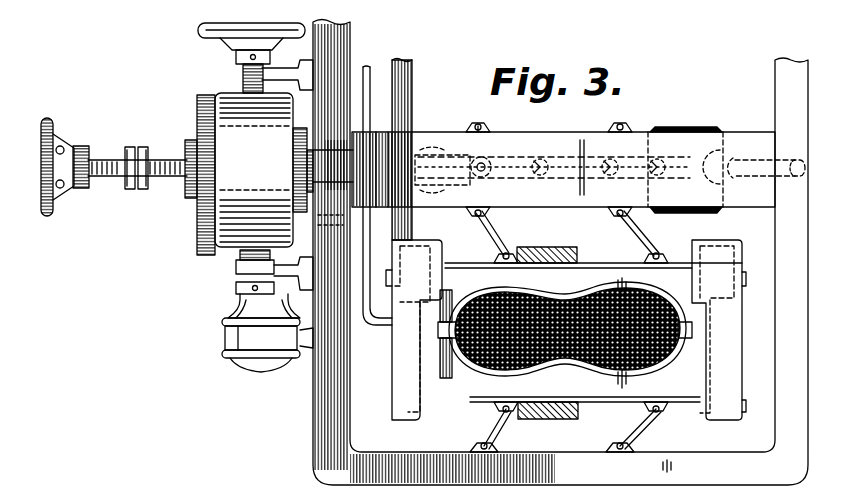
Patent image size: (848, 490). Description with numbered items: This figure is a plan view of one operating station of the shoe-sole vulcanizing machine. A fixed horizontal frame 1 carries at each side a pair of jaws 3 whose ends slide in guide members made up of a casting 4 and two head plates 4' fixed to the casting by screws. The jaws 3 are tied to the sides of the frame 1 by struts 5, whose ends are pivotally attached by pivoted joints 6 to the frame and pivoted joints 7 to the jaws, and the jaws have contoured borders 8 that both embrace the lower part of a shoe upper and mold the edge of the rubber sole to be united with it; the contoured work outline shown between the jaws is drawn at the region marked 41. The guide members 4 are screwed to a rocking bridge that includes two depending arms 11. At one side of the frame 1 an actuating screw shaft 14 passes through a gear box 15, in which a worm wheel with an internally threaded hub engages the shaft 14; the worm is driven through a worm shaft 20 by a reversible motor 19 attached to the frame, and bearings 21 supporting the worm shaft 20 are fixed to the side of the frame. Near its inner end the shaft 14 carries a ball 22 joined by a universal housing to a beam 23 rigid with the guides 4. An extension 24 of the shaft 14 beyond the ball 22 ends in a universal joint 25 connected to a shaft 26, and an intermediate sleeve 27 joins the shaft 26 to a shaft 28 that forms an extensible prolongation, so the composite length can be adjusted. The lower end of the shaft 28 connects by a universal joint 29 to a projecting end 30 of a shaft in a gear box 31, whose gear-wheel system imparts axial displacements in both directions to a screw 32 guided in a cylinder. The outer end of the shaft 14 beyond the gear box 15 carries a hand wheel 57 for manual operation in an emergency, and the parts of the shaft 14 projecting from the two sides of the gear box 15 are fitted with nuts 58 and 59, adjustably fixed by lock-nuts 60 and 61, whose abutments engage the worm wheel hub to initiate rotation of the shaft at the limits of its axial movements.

The fixed horizontal frame 1 is at (786, 434).
The jaws 3 is at (602, 268).
The casting 4 is at (712, 241).
The head plates 4' is at (558, 332).
The struts 5 is at (488, 237).
The pivoted joints 6 is at (620, 122).
The pivoted joints 7 is at (508, 253).
The borders 8 is at (560, 304).
The depending arms 11 is at (546, 247).
The actuating screw shaft 14 is at (166, 156).
The gear box 15 is at (219, 253).
The reversible motor 19 is at (223, 339).
The worm shaft 20 is at (240, 301).
The bearings 21 is at (238, 76).
The ball 22 is at (433, 136).
The beam 23 is at (413, 78).
The extension 24 is at (472, 123).
The universal joint 25 is at (504, 150).
The shaft 26 is at (541, 152).
The intermediate sleeve 27 is at (578, 150).
The shaft 28 is at (640, 130).
The universal joint 29 is at (660, 152).
The projecting end 30 is at (700, 126).
The gear box 31 is at (722, 128).
The screw 32 is at (746, 164).
The shoe sole 41 is at (640, 369).
The hand wheel 57 is at (50, 126).
The nut 58 is at (143, 190).
The nut 59 is at (333, 150).
The lock-nut 60 is at (130, 190).
The lock-nut 61 is at (330, 229).